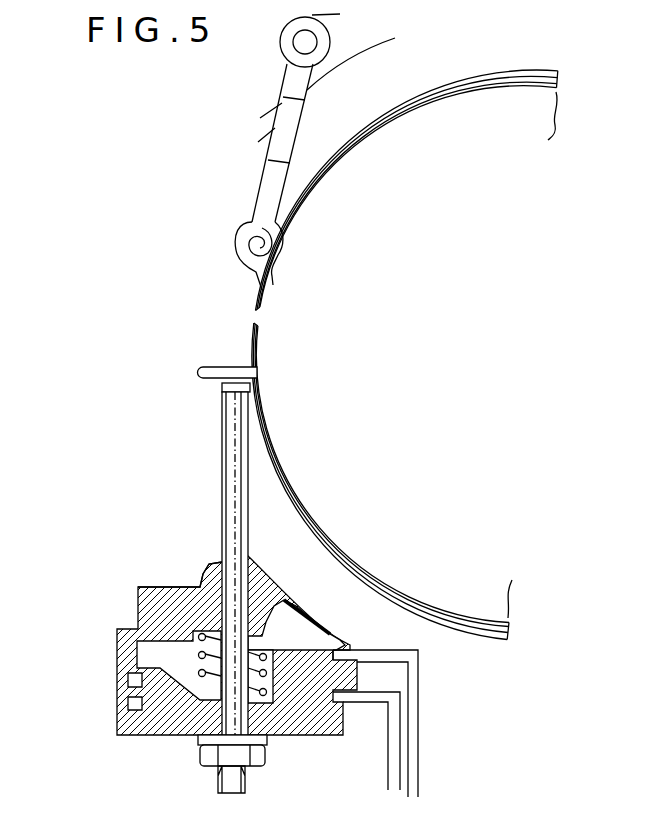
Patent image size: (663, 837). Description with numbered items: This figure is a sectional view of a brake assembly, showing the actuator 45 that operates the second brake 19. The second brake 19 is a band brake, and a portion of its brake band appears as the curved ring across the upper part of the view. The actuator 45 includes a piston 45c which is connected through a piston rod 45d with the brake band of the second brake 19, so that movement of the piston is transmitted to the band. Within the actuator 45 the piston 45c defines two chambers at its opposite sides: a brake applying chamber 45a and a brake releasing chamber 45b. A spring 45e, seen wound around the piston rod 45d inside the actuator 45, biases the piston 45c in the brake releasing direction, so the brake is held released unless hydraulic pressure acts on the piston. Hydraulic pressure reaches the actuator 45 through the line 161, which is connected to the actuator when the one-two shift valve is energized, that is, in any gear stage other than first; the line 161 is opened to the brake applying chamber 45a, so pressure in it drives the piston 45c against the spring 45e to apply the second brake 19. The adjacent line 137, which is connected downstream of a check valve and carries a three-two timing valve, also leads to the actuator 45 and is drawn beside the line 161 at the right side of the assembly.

The second brake 19 is at (494, 78).
The actuator 45 is at (175, 578).
The brake applying chamber 45a is at (136, 697).
The brake releasing chamber 45b is at (140, 600).
The piston 45c is at (176, 742).
The piston rod 45d is at (232, 515).
The spring 45e is at (264, 653).
The line 137 is at (418, 672).
The line 161 is at (390, 744).